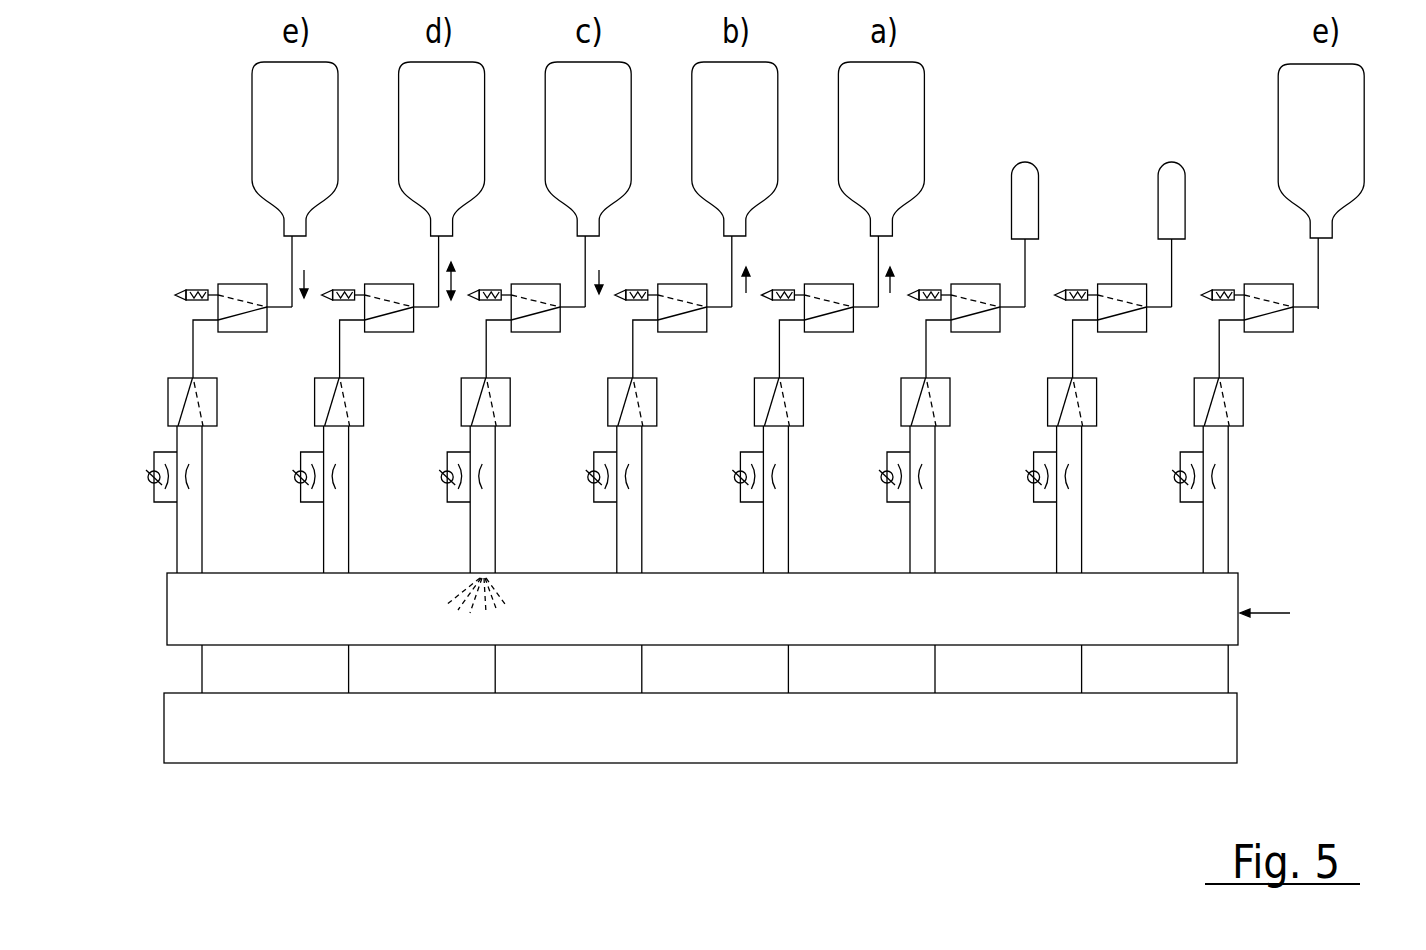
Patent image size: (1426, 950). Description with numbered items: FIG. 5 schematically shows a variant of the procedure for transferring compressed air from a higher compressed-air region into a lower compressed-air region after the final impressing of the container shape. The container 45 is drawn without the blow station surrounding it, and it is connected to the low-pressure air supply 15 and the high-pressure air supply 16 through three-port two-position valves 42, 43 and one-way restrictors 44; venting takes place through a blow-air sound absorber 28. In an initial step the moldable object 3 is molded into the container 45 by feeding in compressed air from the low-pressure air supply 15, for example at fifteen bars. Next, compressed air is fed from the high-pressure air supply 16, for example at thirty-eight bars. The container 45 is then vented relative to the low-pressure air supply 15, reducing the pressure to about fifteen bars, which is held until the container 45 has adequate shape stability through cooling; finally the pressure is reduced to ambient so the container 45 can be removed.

The moldable object 3 is at (1040, 156).
The low-pressure air supply 15 is at (1228, 625).
The high-pressure air supply 16 is at (453, 750).
The blow-air sound absorber 28 is at (190, 288).
The 3/2-way valve 42 is at (240, 282).
The 3/2-way valve 43 is at (167, 390).
The one-way restrictor 44 is at (145, 458).
The container 45 is at (248, 100).